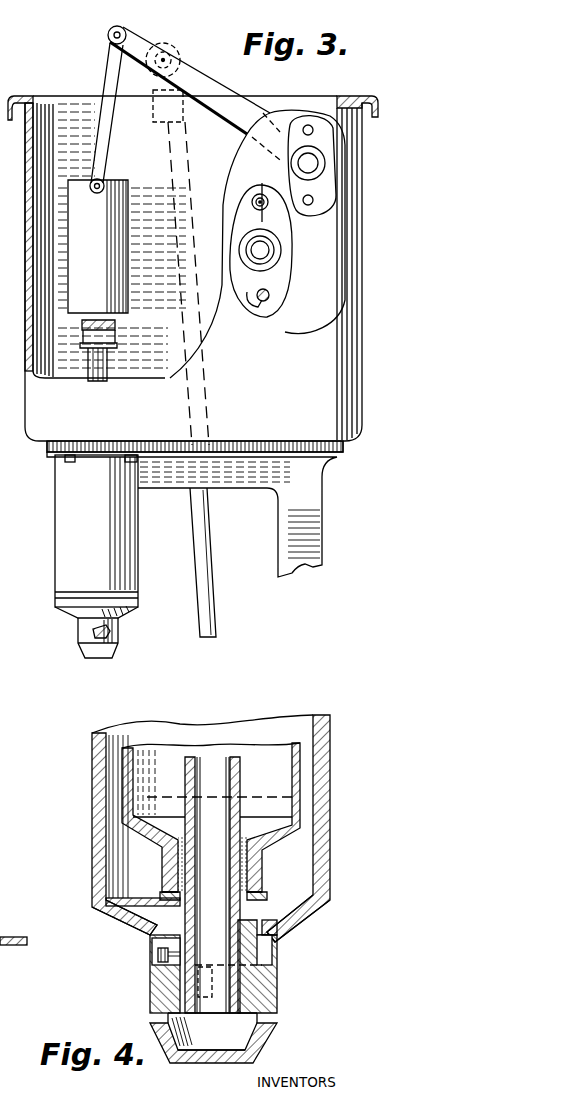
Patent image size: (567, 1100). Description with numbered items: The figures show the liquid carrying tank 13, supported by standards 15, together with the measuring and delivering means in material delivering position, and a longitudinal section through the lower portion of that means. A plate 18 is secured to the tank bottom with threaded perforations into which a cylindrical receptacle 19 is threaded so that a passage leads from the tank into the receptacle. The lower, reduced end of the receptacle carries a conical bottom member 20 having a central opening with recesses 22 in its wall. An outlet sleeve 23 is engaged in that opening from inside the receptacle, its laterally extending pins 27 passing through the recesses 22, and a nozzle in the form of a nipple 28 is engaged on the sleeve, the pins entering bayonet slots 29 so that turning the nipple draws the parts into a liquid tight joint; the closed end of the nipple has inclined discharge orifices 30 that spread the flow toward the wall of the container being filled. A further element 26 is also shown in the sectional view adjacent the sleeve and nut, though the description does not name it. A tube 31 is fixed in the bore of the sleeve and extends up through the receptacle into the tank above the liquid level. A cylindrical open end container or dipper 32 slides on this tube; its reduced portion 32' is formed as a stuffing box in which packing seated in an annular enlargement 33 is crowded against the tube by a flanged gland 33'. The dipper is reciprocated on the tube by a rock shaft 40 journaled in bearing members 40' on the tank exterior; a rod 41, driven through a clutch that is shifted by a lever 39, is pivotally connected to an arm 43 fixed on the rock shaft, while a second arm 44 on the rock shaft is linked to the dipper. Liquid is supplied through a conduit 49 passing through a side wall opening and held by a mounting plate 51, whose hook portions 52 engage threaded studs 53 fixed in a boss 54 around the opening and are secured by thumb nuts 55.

In FIG. 3, the liquid carrying tank 13 is at (73, 100).
In FIG. 3, the standards 15 is at (300, 506).
In FIG. 3, the plate 18 is at (47, 455).
In FIG. 3, the cylindrical receptacle 19 is at (67, 527).
In FIG. 4, the cylindrical receptacle 19 is at (327, 752).
In FIG. 3, the conical bottom member 20 is at (133, 613).
In FIG. 4, the conical bottom member 20 is at (303, 920).
In FIG. 4, the recesses 22 is at (150, 945).
In FIG. 4, the sleeve 23 is at (283, 942).
In FIG. 4, the packing 26 is at (158, 957).
In FIG. 3, the pins 27 is at (95, 632).
In FIG. 4, the pins 27 is at (278, 1018).
In FIG. 3, the nipple 28 is at (118, 653).
In FIG. 4, the nipple 28 is at (150, 993).
In FIG. 3, the bayonet slots 29 is at (118, 637).
In FIG. 4, the bayonet slots 29 is at (277, 984).
In FIG. 4, the discharge orifices 30 is at (191, 1064).
In FIG. 3, the tube 31 is at (107, 377).
In FIG. 4, the tube 31 is at (240, 771).
In FIG. 3, the cylindrical open end container 32 is at (105, 231).
In FIG. 4, the cylindrical open end container 32 is at (211, 793).
In FIG. 3, the reduced portion 32' is at (58, 343).
In FIG. 4, the reduced portion 32' is at (114, 882).
In FIG. 4, the annular enlargement 33 is at (230, 872).
In FIG. 4, the flanged gland 33' is at (268, 888).
In FIG. 4, the lever 39 is at (0, 930).
In FIG. 3, the rock shaft 40 is at (336, 166).
In FIG. 3, the bearing members 40' is at (314, 227).
In FIG. 3, the rod 41 is at (217, 622).
In FIG. 3, the arm 43 is at (224, 67).
In FIG. 3, the arm 44 is at (233, 110).
In FIG. 3, the conduit 49 is at (272, 258).
In FIG. 3, the mounting plate 51 is at (273, 282).
In FIG. 3, the hook portions 52 is at (263, 192).
In FIG. 3, the threaded studs 53 is at (247, 297).
In FIG. 3, the boss 54 is at (240, 198).
In FIG. 3, the thumb nuts 55 is at (257, 195).